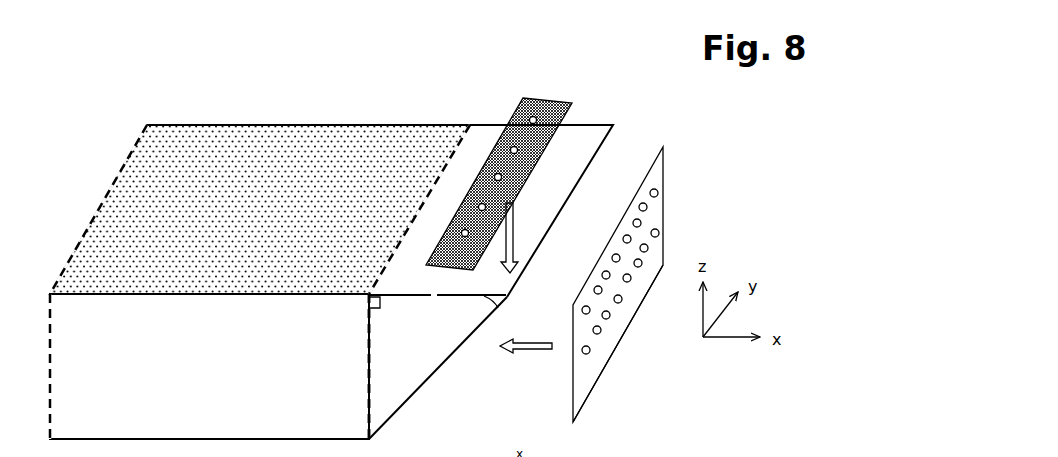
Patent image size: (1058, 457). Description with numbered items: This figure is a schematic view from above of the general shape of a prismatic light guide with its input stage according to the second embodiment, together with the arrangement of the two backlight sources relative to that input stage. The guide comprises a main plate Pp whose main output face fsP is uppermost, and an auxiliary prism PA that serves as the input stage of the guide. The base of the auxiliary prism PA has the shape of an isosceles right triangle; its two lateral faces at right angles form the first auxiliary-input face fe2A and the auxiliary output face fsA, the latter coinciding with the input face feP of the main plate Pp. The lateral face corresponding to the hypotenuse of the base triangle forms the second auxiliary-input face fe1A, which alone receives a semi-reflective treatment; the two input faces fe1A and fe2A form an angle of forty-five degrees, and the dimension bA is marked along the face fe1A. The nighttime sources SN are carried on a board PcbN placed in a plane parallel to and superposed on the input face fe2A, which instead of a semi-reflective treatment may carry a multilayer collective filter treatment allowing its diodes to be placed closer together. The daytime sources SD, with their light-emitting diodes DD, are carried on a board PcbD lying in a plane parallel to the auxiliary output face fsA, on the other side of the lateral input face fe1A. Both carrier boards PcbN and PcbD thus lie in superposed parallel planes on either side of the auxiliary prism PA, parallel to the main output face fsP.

The main plate Pp is at (162, 125).
The main output face fsP is at (260, 209).
The auxiliary prism PA is at (480, 124).
The first auxiliary-input face fe2A is at (596, 126).
The edge of passive part feP is at (360, 380).
The auxiliary output face fsA is at (336, 366).
The width of sloped face bA is at (438, 367).
The second auxiliary-input face fe1A is at (434, 378).
The carrier board of the nighttime sources PcbN is at (567, 92).
The nighttime sources SN is at (545, 80).
The carrier board of the daytime sources PcbD is at (663, 168).
The light-emitting diodes DD is at (648, 248).
The daytime sources SD is at (618, 372).